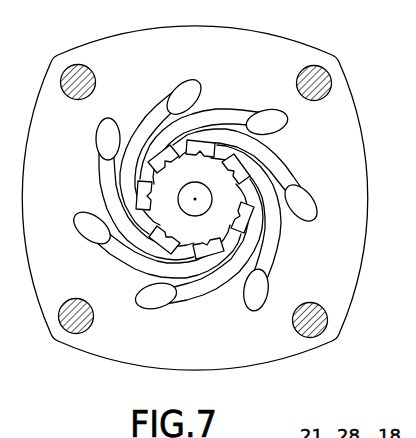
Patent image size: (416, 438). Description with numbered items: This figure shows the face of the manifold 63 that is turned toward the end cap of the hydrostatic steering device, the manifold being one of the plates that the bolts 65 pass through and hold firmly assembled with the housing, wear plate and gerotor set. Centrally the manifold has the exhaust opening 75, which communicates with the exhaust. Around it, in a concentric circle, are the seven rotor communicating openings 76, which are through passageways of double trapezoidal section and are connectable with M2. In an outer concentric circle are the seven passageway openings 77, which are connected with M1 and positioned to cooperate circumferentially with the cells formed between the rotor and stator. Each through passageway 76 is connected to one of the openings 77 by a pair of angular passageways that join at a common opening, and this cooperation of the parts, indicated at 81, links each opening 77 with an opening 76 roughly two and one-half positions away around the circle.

The manifold 63 is at (360, 184).
The bolts 65 is at (324, 321).
The exhaust opening 75 is at (182, 207).
The rotor communicating openings 76 is at (240, 166).
The passageway openings 77 is at (310, 219).
The cooperation of the parts 81 is at (275, 238).